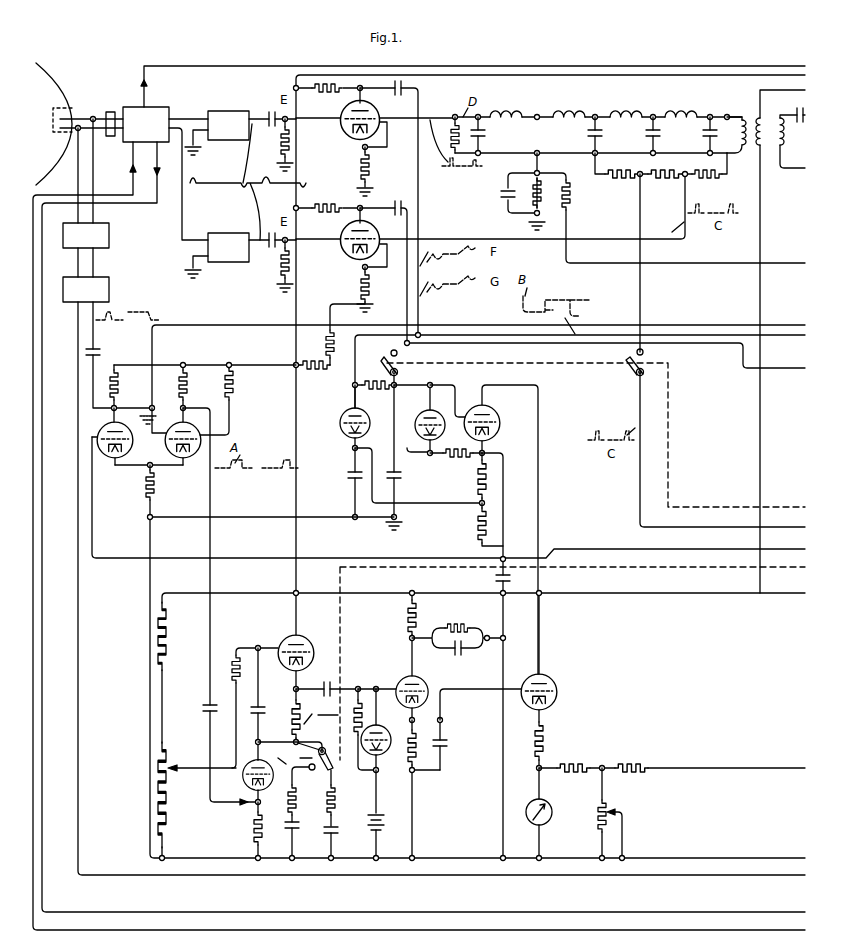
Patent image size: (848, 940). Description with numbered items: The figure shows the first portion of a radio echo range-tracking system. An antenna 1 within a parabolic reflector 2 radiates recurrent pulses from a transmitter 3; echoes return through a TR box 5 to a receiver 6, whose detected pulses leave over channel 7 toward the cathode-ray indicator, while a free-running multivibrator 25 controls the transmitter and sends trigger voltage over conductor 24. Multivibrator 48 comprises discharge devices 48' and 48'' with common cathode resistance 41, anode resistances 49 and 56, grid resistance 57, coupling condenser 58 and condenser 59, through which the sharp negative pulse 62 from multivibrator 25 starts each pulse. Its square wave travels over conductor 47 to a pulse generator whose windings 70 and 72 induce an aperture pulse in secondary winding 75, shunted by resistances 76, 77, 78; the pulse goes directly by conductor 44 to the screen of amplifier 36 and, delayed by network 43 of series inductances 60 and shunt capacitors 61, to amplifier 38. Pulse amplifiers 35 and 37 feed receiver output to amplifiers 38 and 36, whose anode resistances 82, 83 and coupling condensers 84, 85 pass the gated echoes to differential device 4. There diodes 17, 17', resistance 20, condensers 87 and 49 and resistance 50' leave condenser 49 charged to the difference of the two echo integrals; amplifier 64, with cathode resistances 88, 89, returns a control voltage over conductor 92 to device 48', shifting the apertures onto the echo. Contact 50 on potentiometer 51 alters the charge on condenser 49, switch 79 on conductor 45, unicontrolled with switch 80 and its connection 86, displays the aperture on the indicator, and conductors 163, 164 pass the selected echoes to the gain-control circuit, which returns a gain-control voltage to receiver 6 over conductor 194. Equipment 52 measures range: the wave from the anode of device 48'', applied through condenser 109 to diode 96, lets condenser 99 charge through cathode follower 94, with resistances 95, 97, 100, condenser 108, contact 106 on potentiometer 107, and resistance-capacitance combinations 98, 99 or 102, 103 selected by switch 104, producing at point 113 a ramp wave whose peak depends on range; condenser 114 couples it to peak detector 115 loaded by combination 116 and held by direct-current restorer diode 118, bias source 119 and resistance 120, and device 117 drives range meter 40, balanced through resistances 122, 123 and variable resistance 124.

The antenna 1 is at (72, 111).
The parabolic reflector 2 is at (54, 86).
The transmitter 3 is at (109, 236).
The TR box 5 is at (110, 112).
The receiver 6 is at (167, 108).
The channel 7 is at (157, 189).
The conductor 24 is at (77, 336).
The multivibrator 25 is at (107, 277).
The pulse amplifier 35 is at (209, 135).
The pulse amplifier 37 is at (231, 233).
The pulse amplifier 36 is at (343, 256).
The pulse amplifier 38 is at (342, 135).
The range indicating meter 40 is at (556, 812).
The common resistance 41 is at (146, 504).
The delay network 43 is at (606, 102).
The conductor 44 is at (601, 237).
The conductor 45 is at (643, 208).
The conductor 47 is at (153, 346).
The multivibrator 48 is at (149, 457).
The electron discharge device 48' is at (107, 436).
The electron discharge device 48'' is at (211, 606).
The condenser 49 is at (403, 476).
The variable contact 50 is at (318, 364).
The resistance 50' is at (374, 392).
The potentiometer 51 is at (324, 337).
The equipment 52 is at (369, 666).
The resistance 56 is at (188, 388).
The resistance 57 is at (235, 384).
The coupling condenser 58 is at (153, 414).
The condenser 59 is at (100, 354).
The inductor 60 is at (556, 106).
The shunt capacitors 61 is at (594, 135).
The negative pulse 62 is at (136, 322).
The amplifier 64 is at (493, 411).
The winding 70 is at (788, 132).
The winding 72 is at (770, 118).
The secondary winding 75 is at (752, 150).
The resistance 76 is at (712, 182).
The resistance 77 is at (674, 177).
The resistance 78 is at (611, 177).
The switch 79 is at (644, 357).
The switch 80 is at (389, 369).
The resistance 82 is at (333, 92).
The resistance 83 is at (332, 208).
The coupling condenser 84 is at (407, 90).
The coupling condenser 85 is at (400, 201).
The connection 86 is at (391, 389).
The condenser 87 is at (348, 480).
The resistance 88 is at (474, 494).
The resistance 89 is at (474, 540).
The conductor 92 is at (536, 482).
The electron discharge device 94 is at (304, 641).
The resistance 95 is at (290, 712).
The unilateral conducting device 96 is at (248, 786).
The resistance 97 is at (248, 830).
The resistance 98 is at (339, 798).
The condenser 99 is at (342, 832).
The resistance 100 is at (228, 655).
The resistance 102 is at (296, 808).
The capacitance 103 is at (284, 830).
The switch 104 is at (325, 750).
The variable contact 106 is at (174, 772).
The potentiometer 107 is at (166, 766).
The large condenser 108 is at (254, 718).
The condenser 109 is at (192, 706).
The point 113 is at (312, 740).
The condenser 114 is at (324, 680).
The electron discharge device 115 is at (415, 680).
The parallel resistance-capacitance combination 116 is at (444, 756).
The electron discharge device 117 is at (551, 680).
The diode 118 is at (387, 766).
The source of bias potential 119 is at (390, 818).
The resistance 120 is at (359, 690).
The resistance 122 is at (574, 762).
The resistance 123 is at (646, 762).
The variable resistance 124 is at (618, 800).
The conductor 163 is at (712, 333).
The conductor 164 is at (709, 344).
The conductor 194 is at (798, 68).
The diode 17 is at (440, 419).
The diode 17' is at (346, 416).
The resistance 20 is at (455, 458).
The differential device 4 is at (480, 382).